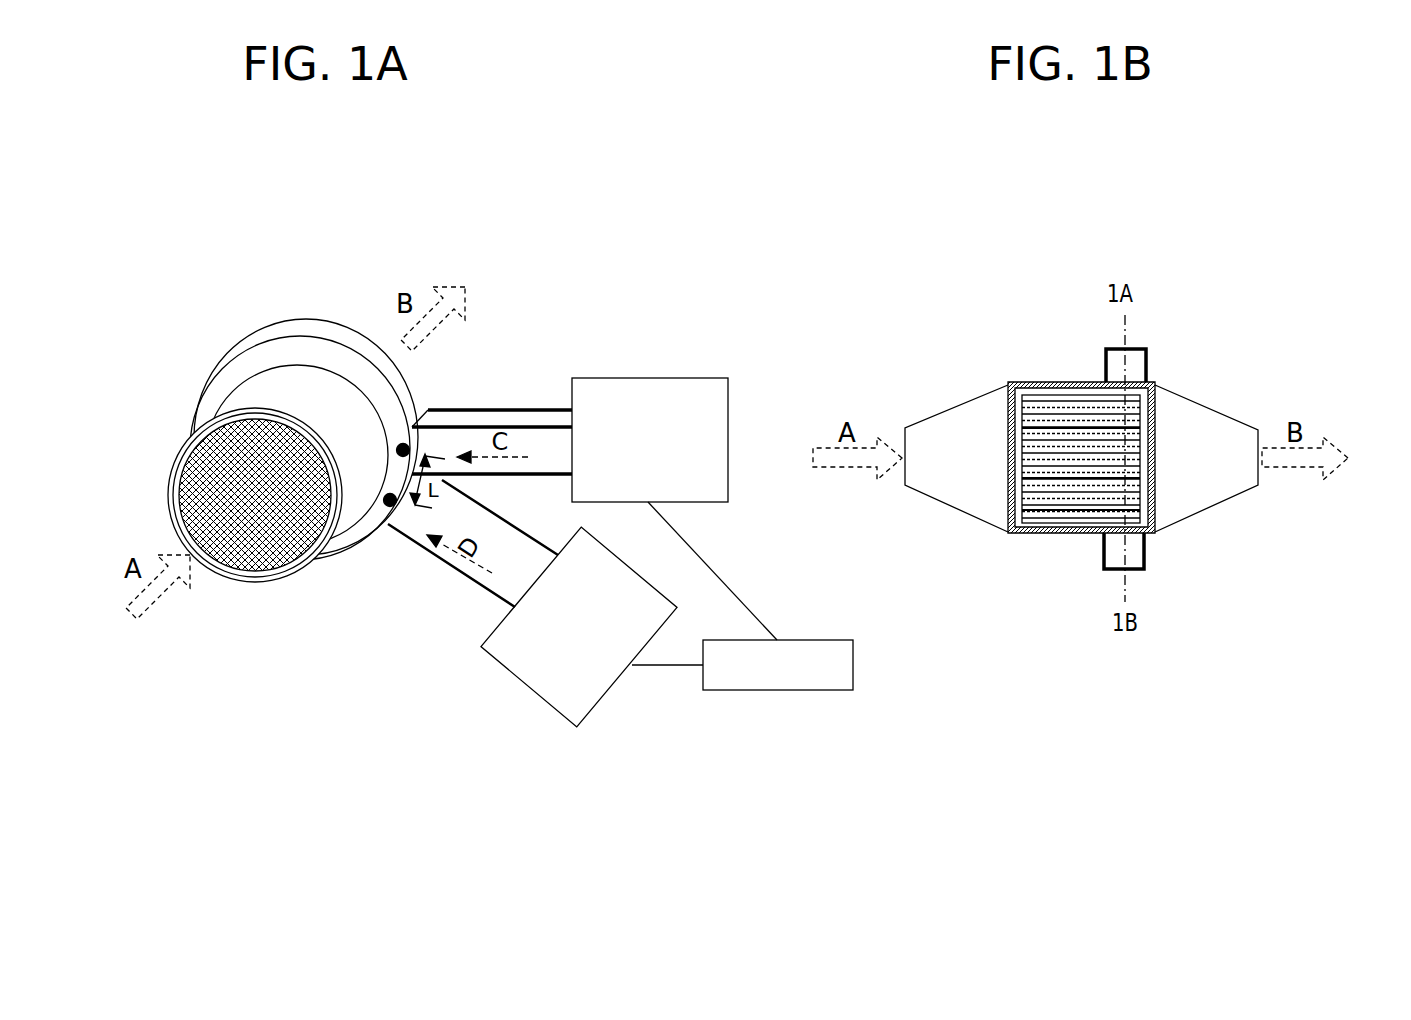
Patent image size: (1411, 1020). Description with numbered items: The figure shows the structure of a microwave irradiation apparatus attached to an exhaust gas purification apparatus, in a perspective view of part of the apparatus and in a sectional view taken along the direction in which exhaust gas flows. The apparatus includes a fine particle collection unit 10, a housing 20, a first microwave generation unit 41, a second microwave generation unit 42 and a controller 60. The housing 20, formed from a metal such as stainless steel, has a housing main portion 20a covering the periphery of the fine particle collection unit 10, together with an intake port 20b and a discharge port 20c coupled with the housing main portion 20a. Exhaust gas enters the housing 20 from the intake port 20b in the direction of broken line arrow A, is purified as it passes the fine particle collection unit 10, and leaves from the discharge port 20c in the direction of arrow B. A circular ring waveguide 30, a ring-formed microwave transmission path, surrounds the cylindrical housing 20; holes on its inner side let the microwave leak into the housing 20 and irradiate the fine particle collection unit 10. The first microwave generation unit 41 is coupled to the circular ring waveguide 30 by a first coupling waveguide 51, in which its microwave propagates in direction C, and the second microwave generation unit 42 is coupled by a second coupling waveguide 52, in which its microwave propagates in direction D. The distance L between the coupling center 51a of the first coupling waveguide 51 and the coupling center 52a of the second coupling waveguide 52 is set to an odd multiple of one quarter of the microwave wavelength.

In FIG. 1A, the fine particle collection unit 10 is at (255, 582).
In FIG. 1B, the fine particle collection unit 10 is at (1060, 530).
In FIG. 1A, the housing 20 is at (273, 378).
In FIG. 1B, the housing 20 is at (1081, 365).
In FIG. 1B, the housing main portion 20a is at (1077, 399).
In FIG. 1B, the intake port 20b is at (962, 402).
In FIG. 1B, the discharge port 20c is at (1205, 405).
In FIG. 1A, the circular ring waveguide 30 is at (327, 322).
In FIG. 1B, the circular ring waveguide 30 is at (1137, 572).
In FIG. 1A, the first microwave generation unit 41 is at (676, 378).
In FIG. 1A, the second microwave generation unit 42 is at (542, 700).
In FIG. 1A, the first coupling waveguide 51 is at (500, 410).
In FIG. 1A, the center of the coupling portion between the circular ring waveguide and the first 51a is at (428, 410).
In FIG. 1A, the second coupling waveguide 52 is at (443, 560).
In FIG. 1A, the center of the coupling portion between the circular ring waveguide and the secon 52a is at (392, 512).
In FIG. 1A, the controller 60 is at (766, 690).